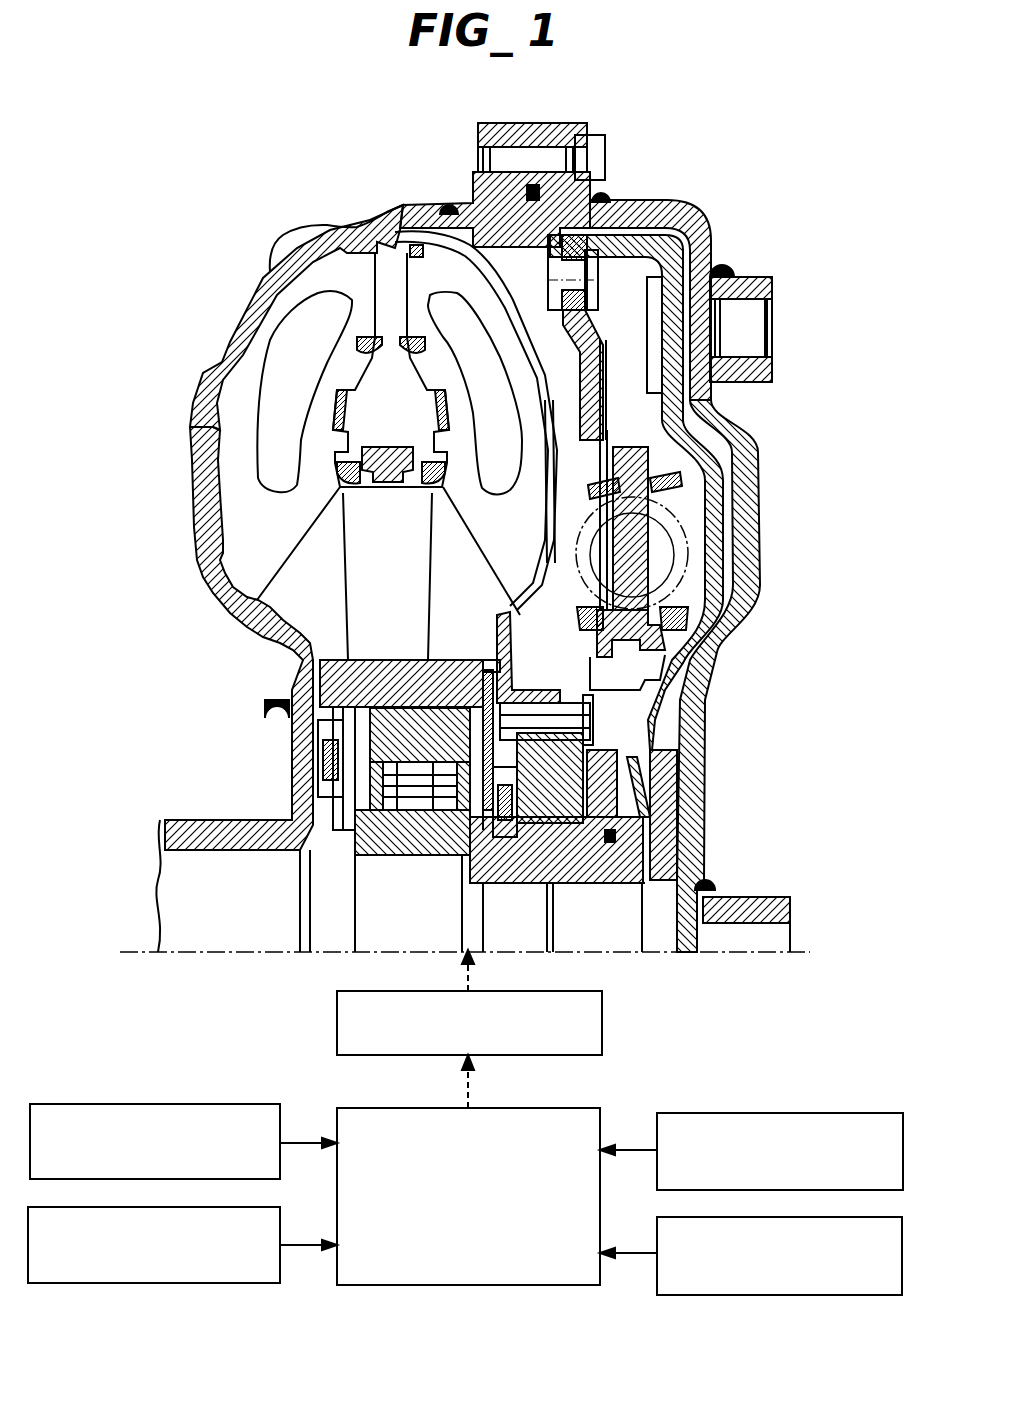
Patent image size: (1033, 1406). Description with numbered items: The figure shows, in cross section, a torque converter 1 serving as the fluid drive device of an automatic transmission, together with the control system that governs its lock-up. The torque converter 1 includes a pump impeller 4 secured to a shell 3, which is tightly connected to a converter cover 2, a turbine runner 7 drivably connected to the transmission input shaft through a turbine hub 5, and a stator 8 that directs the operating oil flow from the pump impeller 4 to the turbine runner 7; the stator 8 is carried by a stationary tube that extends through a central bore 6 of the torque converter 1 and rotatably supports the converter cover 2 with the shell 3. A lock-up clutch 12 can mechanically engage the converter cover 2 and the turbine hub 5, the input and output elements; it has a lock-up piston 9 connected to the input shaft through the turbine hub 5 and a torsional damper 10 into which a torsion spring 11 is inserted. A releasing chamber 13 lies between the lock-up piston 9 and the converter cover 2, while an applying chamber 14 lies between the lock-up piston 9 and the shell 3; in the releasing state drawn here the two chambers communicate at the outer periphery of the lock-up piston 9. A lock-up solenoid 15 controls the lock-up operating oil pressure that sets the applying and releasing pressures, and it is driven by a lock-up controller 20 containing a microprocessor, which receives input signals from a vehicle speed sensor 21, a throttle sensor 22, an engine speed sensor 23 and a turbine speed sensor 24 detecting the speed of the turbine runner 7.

The torque converter 1 is at (748, 749).
The converter cover 2 is at (760, 605).
The shell 3 is at (313, 225).
The pump impeller 4 is at (230, 390).
The turbine hub 5 is at (615, 870).
The central bore 6 is at (612, 942).
The turbine runner 7 is at (417, 283).
The stator 8 is at (357, 607).
The lock-up piston 9 is at (727, 440).
The torsional damper 10 is at (625, 672).
The torsion spring 11 is at (683, 548).
The lock-up clutch 12 is at (608, 323).
The releasing chamber 13 is at (675, 797).
The applying chamber 14 is at (500, 245).
The lock-up solenoid 15 is at (603, 1025).
The lock-up controller 20 is at (470, 1285).
The vehicle speed sensor 21 is at (143, 1104).
The throttle sensor 22 is at (137, 1283).
The engine speed sensor 23 is at (782, 1113).
The turbine speed sensor 24 is at (778, 1295).